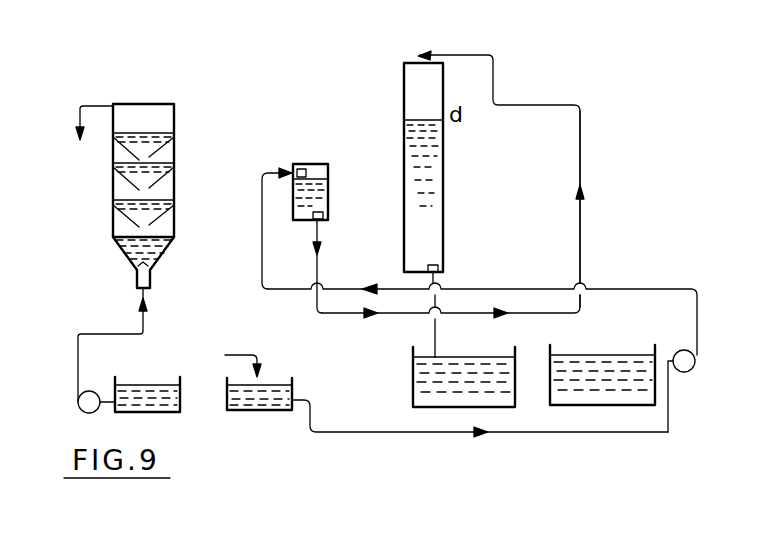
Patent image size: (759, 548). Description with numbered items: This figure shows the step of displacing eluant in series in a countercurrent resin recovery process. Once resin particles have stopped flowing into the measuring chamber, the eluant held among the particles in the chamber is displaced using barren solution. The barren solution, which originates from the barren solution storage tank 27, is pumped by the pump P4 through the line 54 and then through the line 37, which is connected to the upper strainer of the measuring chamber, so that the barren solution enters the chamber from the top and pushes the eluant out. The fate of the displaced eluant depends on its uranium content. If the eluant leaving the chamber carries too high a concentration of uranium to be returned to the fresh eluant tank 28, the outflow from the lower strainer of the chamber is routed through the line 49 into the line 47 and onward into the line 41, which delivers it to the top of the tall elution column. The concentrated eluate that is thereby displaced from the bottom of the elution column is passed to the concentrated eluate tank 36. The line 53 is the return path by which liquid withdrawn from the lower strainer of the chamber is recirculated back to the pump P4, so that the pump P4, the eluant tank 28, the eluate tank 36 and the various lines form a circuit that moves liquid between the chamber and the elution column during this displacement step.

The barren solution storage tank 27 is at (292, 388).
The eluant tank 28 is at (572, 407).
The concentrated eluate tank 36 is at (418, 405).
The line 37 is at (262, 237).
The line 41 is at (468, 55).
The line 47 is at (582, 165).
The line 49 is at (548, 314).
The line 53 is at (500, 433).
The line 54 is at (287, 288).
The pump P4 is at (684, 372).